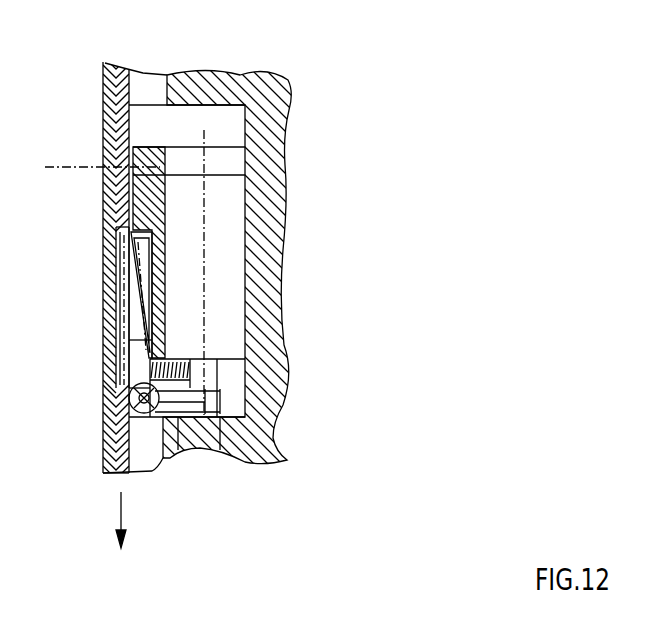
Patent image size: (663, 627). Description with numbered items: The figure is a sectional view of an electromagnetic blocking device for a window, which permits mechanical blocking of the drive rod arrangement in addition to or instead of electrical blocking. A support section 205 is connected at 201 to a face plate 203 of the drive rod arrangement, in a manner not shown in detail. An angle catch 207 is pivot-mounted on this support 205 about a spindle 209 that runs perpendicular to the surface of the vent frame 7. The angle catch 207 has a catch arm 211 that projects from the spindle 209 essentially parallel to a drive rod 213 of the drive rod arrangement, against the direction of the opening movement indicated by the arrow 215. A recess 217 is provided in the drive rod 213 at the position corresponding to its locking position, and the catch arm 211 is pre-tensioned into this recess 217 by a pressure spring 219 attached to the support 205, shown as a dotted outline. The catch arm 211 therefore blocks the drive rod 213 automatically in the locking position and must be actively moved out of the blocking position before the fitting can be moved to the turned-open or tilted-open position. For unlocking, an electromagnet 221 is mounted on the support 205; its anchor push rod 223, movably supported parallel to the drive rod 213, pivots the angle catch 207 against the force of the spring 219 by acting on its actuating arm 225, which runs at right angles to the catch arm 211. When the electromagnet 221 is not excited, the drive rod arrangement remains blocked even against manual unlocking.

The vent frame 7 is at (273, 83).
The connection point 201 is at (70, 168).
The face plate 203 is at (103, 378).
The support section 205 is at (132, 202).
The angle catch 207 is at (130, 340).
The spindle 209 is at (128, 420).
The catch arm 211 is at (133, 290).
The drive rod 213 is at (115, 483).
The arrow indicating opening movement direction 215 is at (120, 515).
The recess 217 is at (120, 230).
The pressure spring 219 is at (178, 420).
The electromagnet 221 is at (235, 195).
The anchor push rod 223 is at (208, 375).
The actuating arm 225 is at (220, 420).